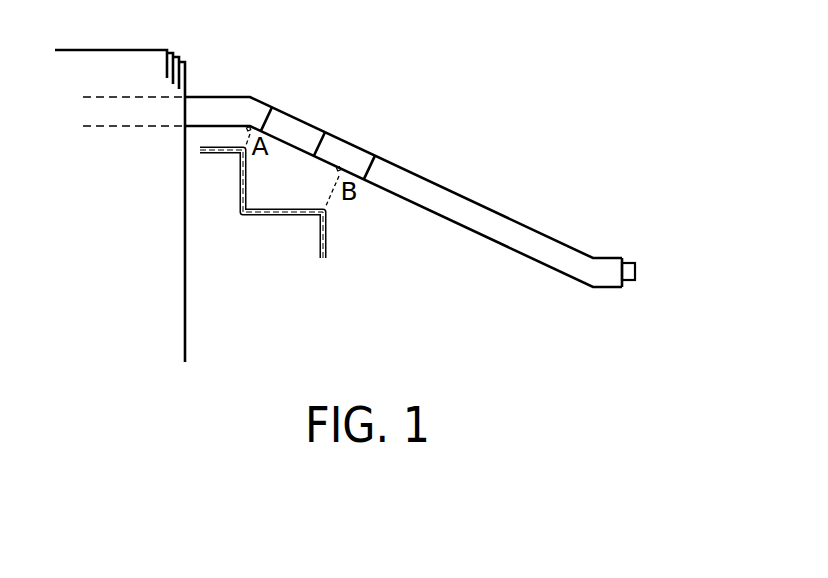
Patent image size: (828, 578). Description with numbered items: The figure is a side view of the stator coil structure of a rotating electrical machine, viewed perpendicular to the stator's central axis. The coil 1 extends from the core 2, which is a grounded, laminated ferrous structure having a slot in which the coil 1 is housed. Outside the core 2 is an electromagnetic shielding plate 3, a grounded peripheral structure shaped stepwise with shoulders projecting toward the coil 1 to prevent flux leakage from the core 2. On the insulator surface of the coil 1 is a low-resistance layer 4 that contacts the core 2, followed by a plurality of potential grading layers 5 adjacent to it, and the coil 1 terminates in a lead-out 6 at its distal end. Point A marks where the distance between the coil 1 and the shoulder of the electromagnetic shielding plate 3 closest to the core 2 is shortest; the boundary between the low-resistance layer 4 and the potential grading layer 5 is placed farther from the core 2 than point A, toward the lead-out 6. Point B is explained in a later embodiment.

The coil 1 is at (662, 252).
The core 2 is at (127, 58).
The electromagnetic shielding plate 3 is at (329, 233).
The low-resistance layer 4 is at (219, 103).
The potential grading layer 5 is at (296, 124).
The lead-out 6 is at (629, 283).